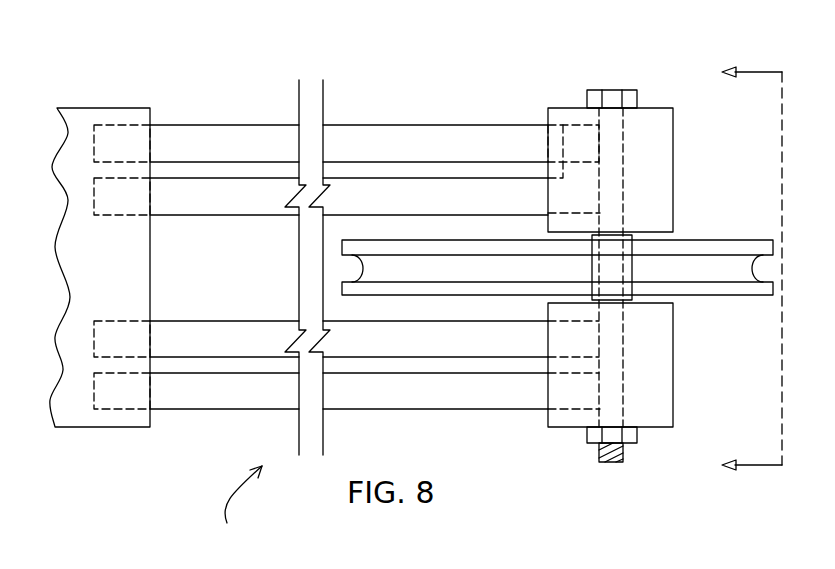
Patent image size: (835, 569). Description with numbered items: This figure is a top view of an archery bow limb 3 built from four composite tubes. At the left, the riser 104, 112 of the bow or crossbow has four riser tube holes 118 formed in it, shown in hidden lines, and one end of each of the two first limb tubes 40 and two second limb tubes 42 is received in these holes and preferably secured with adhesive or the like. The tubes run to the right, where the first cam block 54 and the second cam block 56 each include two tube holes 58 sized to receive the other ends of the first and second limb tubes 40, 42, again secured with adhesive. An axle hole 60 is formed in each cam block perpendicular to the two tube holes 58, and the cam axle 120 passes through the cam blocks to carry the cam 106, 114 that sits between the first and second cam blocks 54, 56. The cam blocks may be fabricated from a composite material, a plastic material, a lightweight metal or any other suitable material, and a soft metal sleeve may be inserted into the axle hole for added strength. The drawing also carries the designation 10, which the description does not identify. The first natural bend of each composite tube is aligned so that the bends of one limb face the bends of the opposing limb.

The archery bow limb 3 is at (243, 506).
The section line 10 is at (752, 268).
The first limb tube 40 is at (403, 178).
The second limb tube 42 is at (478, 345).
The first cam block 54 is at (673, 172).
The second cam block 56 is at (673, 385).
The tube holes 58 is at (563, 178).
The axle hole 60 is at (623, 395).
The riser 104 is at (91, 226).
The riser 112 is at (83, 108).
The cams 106 is at (557, 292).
The cams 114 is at (697, 297).
The riser tube holes 118 is at (122, 125).
The cam axle 120 is at (627, 90).